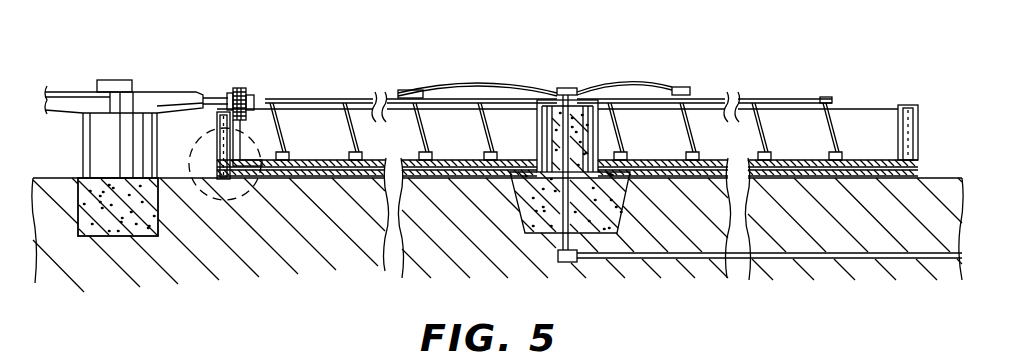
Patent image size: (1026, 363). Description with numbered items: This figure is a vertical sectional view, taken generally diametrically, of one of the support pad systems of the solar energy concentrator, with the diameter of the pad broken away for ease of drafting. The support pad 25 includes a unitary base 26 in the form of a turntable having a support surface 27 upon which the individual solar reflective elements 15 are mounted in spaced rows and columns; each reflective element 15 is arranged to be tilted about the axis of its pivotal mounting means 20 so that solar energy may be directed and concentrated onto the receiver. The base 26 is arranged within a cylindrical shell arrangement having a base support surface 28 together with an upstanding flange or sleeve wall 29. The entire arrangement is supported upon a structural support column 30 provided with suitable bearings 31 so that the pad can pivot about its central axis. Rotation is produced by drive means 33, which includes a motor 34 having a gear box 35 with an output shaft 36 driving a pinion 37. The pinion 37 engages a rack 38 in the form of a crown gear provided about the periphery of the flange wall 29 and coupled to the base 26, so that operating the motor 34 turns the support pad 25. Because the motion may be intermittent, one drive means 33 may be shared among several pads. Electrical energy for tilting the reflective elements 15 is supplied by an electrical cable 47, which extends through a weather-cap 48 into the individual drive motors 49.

The solar reflective elements 15 is at (347, 100).
The pivotal mounting means 20 is at (432, 153).
The support pad 25 is at (484, 196).
The unitary base 26 is at (873, 153).
The support surface 27 is at (797, 153).
The base support surface 28 is at (315, 160).
The flange or sleeve wall 29 is at (218, 134).
The structural support column 30 is at (540, 235).
The bearings 31 is at (541, 127).
The drive means 33 is at (143, 70).
The motor 34 is at (82, 146).
The gear box 35 is at (172, 92).
The output shaft 36 is at (214, 92).
The pinion 37 is at (240, 89).
The rack 38 is at (247, 117).
The electrical cable 47 is at (710, 262).
The weather-cap 48 is at (584, 92).
The drive motors 49 is at (408, 90).